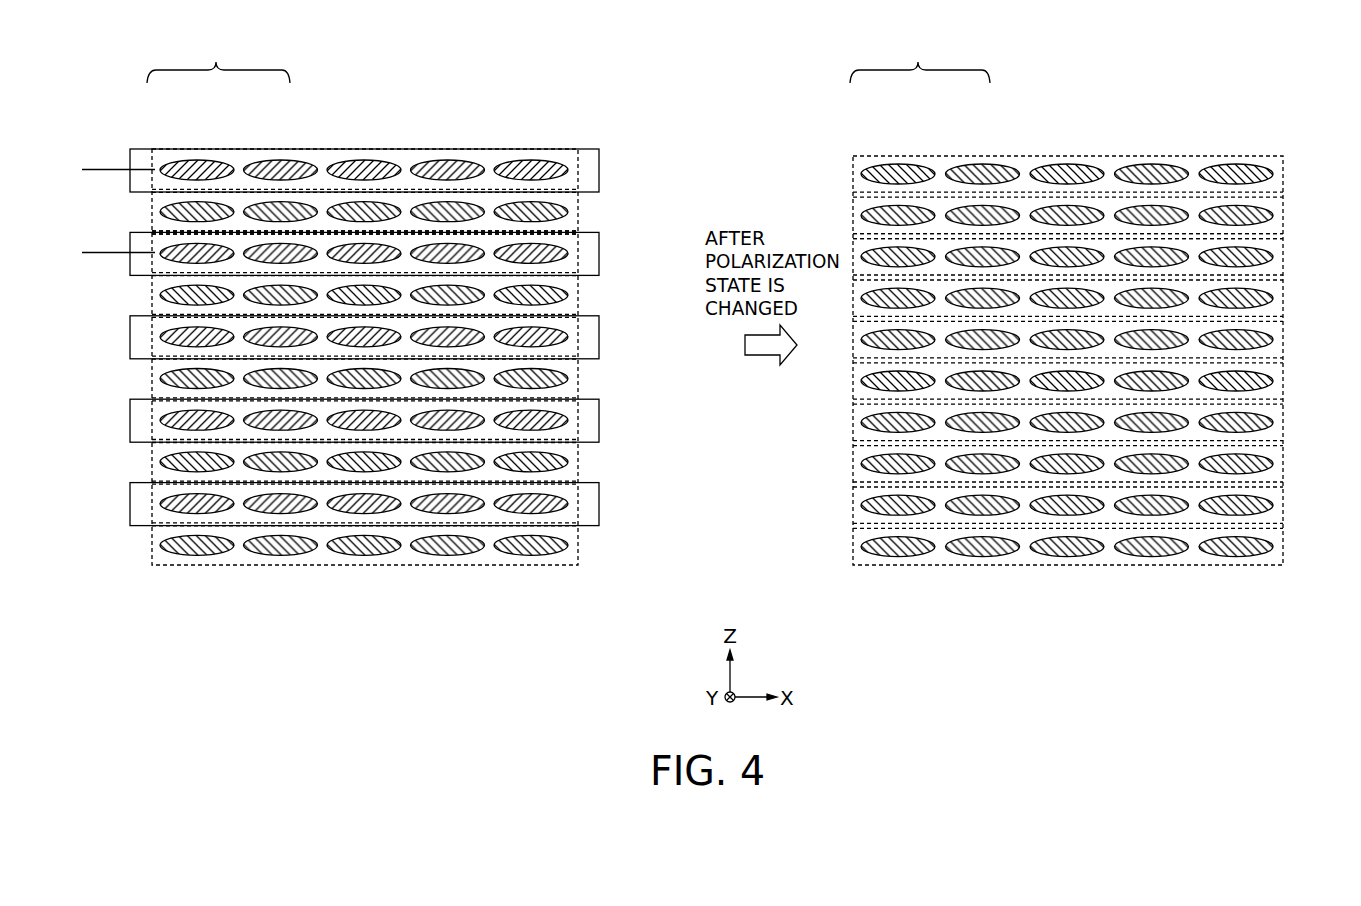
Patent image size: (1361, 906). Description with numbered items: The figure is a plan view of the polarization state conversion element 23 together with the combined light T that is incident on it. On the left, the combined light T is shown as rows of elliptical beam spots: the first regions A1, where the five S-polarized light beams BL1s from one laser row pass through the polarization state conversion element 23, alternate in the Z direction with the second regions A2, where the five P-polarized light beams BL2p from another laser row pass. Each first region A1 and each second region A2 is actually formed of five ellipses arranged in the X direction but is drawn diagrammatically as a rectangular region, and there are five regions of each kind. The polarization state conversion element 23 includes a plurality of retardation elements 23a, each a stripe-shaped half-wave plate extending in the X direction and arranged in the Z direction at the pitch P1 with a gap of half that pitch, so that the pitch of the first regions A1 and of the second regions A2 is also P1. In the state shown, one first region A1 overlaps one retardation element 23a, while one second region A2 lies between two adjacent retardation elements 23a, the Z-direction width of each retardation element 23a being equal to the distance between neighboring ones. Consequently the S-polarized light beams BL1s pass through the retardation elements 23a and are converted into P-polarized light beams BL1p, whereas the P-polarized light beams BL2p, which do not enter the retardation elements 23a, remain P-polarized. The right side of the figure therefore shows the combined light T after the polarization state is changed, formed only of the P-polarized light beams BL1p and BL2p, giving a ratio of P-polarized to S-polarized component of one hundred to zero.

The polarization state conversion element 23 is at (592, 148).
The retardation element 23a is at (599, 173).
The first region A1 is at (579, 163).
The second region A2 is at (579, 222).
The combined light T is at (216, 62).
The pitch P1 is at (89, 170).
The S-polarized light beam BL1s is at (163, 160).
The P-polarized light beam BL2p is at (247, 208).
The P-polarized light beam BL1p is at (865, 162).